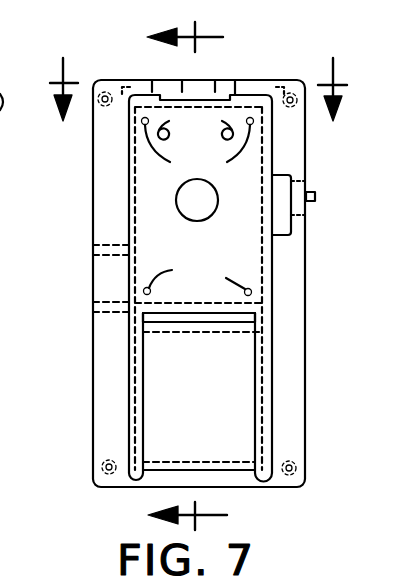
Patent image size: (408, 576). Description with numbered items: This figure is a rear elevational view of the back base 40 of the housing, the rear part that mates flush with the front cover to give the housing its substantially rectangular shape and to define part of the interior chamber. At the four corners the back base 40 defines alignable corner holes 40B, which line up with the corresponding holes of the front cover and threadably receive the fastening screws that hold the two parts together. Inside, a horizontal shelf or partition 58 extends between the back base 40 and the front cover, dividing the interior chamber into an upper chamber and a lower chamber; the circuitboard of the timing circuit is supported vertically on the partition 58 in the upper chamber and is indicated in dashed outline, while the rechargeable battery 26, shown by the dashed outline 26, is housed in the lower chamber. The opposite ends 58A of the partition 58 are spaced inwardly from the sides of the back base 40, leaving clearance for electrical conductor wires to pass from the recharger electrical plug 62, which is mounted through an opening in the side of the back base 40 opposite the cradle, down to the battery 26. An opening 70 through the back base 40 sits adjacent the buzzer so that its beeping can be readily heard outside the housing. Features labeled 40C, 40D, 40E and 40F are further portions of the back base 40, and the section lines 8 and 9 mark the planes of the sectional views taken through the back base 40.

The back base 40 is at (310, 276).
The alignable corner holes 40B is at (98, 106).
The side rail hidden portion 40C is at (93, 246).
The pivot pins 40D is at (198, 207).
The side projection 40E is at (304, 182).
The hook members 40F is at (195, 131).
The recharger electrical plug 62 is at (316, 196).
The opening 70 is at (205, 217).
The battery 26 is at (263, 415).
The horizontal shelf or partition 58 is at (193, 318).
The opposite ends of the partition 58A is at (140, 316).
The section line 8- 8 is at (197, 276).
The section line 9- 9 is at (196, 83).